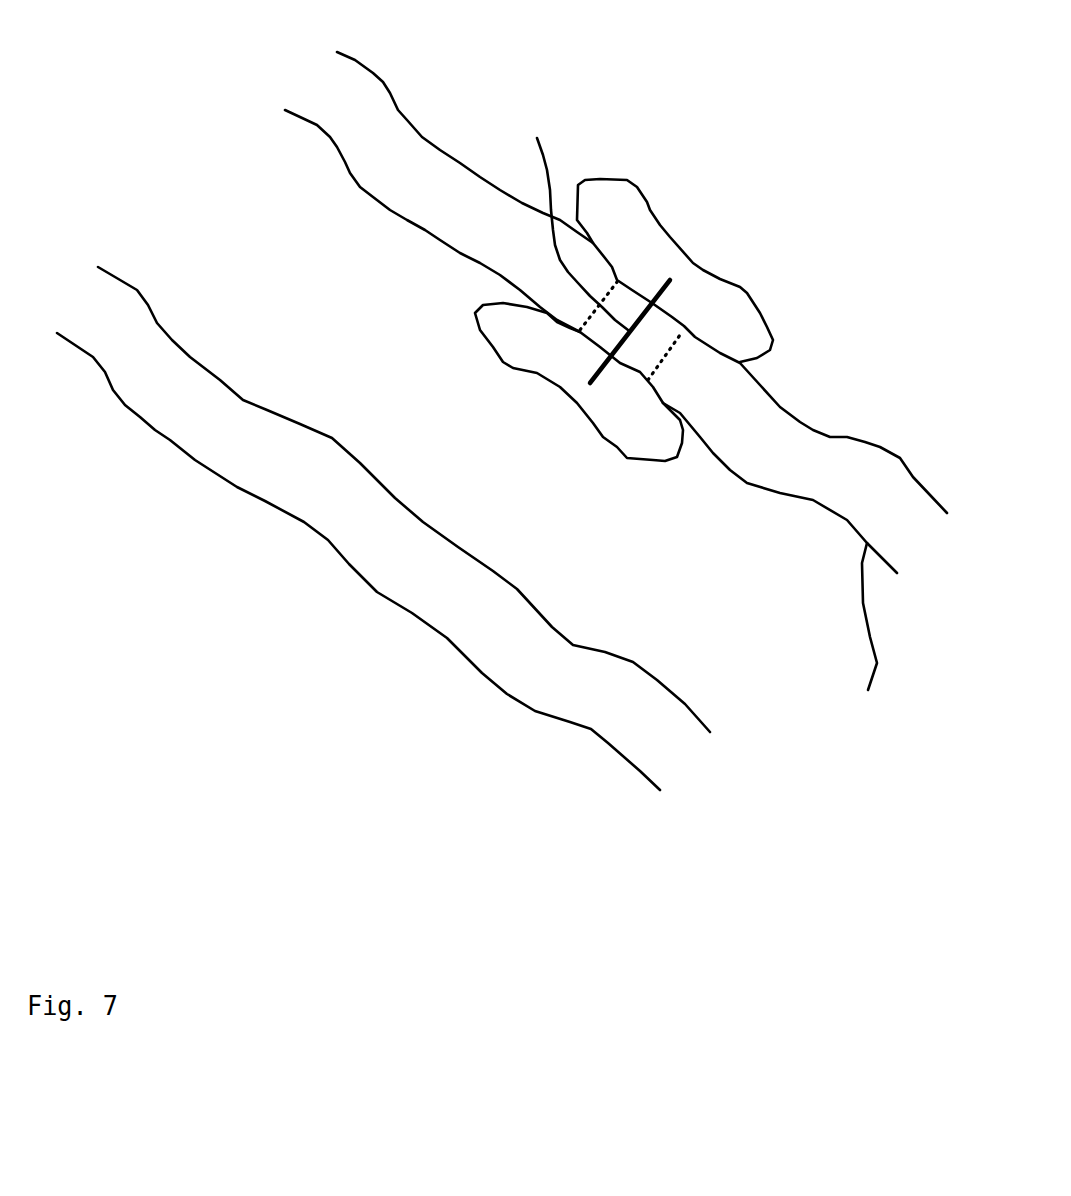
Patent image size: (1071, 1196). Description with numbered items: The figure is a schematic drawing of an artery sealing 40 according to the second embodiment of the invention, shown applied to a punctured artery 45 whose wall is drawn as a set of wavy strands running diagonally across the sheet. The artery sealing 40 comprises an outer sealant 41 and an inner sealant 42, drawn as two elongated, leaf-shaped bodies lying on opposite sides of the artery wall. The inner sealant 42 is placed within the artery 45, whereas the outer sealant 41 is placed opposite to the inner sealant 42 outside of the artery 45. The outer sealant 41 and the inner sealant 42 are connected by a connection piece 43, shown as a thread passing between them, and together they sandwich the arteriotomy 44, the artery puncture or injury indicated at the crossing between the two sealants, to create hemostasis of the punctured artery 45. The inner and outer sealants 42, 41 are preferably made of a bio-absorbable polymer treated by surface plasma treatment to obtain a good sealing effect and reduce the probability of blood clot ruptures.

The artery sealing 40 is at (800, 280).
The outer sealant 41 is at (762, 333).
The inner sealant 42 is at (665, 450).
The connection piece 43 is at (570, 200).
The arteriotomy 44 is at (659, 362).
The artery 45 is at (683, 700).